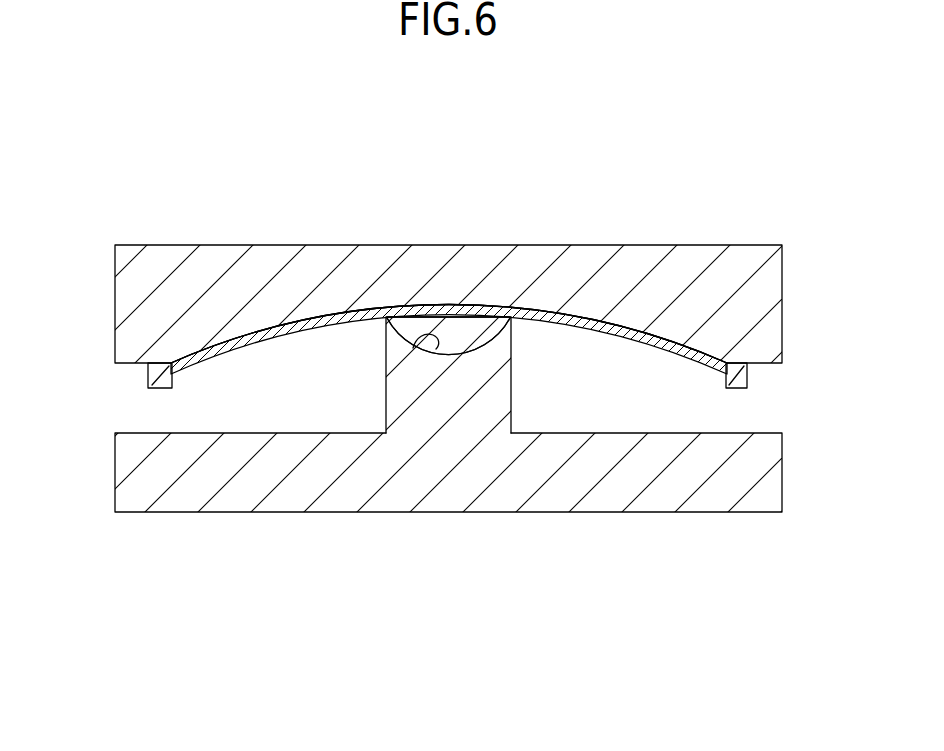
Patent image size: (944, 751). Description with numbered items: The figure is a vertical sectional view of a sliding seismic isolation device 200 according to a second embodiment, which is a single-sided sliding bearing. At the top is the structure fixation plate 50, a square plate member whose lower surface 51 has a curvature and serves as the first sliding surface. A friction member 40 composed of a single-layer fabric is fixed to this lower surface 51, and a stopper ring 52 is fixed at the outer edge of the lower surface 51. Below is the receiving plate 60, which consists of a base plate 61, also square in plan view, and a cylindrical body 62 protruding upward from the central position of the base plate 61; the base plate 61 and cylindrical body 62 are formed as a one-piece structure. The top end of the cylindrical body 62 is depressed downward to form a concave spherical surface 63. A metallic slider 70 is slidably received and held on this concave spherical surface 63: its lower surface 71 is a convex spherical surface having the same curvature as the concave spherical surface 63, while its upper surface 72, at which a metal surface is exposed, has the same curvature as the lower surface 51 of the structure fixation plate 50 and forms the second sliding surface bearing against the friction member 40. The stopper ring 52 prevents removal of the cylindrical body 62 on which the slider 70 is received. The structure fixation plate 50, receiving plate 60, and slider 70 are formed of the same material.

The sliding seismic isolation device 200 is at (505, 173).
The friction member 40 is at (623, 327).
The structure fixation plate 50 is at (748, 288).
The lower surface 51 is at (306, 323).
The stopper ring 52 is at (148, 373).
The receiving plate 60 is at (557, 570).
The base plate 61 is at (452, 477).
The cylindrical body 62 is at (497, 385).
The concave spherical surface 63 is at (483, 350).
The slider 70 is at (407, 330).
The lower surface 71 is at (418, 336).
The upper surface 72 is at (432, 320).